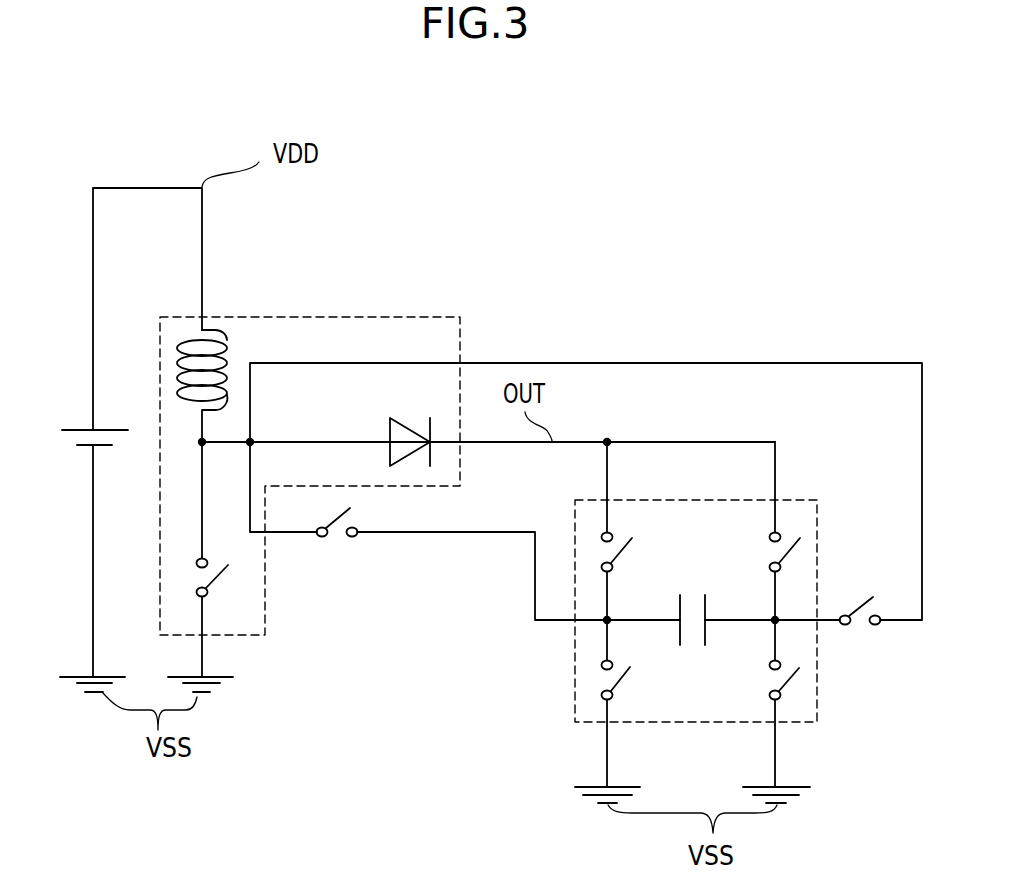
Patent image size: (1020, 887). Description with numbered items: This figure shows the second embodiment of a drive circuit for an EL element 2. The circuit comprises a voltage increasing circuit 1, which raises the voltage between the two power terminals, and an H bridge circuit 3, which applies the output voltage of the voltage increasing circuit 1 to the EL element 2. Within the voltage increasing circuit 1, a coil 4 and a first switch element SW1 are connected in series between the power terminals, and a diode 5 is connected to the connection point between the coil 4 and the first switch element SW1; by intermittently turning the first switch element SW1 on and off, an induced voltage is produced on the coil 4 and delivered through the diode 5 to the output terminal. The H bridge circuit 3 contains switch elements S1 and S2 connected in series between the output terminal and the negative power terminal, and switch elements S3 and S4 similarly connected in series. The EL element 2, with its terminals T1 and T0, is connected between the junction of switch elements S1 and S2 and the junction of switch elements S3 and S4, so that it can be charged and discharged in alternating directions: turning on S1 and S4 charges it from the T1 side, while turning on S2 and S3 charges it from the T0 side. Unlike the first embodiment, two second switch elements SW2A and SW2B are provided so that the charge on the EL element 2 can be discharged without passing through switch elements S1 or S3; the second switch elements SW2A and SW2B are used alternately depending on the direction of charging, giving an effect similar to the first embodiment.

The voltage increasing circuit 1 is at (338, 315).
The EL element 2 is at (700, 602).
The H bridge circuit 3 is at (730, 725).
The coil 4 is at (217, 330).
The diode 5 is at (389, 432).
The first switch element SW1 is at (208, 580).
The second switch element SW2A is at (325, 537).
The second switch element SW2B is at (848, 630).
The switch element S1 is at (605, 565).
The switch element S2 is at (603, 698).
The switch element S3 is at (778, 536).
The switch element S4 is at (783, 698).
The terminal T0 is at (720, 622).
The terminal T1 is at (632, 622).